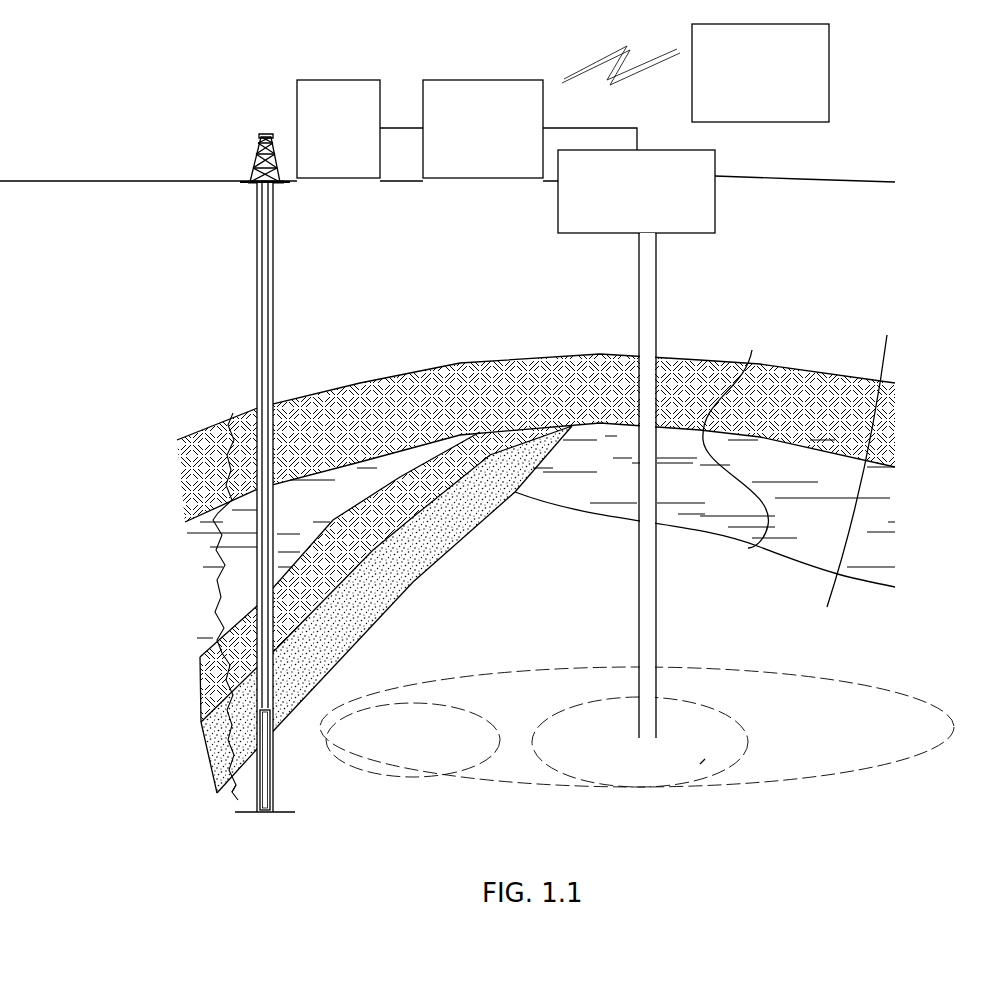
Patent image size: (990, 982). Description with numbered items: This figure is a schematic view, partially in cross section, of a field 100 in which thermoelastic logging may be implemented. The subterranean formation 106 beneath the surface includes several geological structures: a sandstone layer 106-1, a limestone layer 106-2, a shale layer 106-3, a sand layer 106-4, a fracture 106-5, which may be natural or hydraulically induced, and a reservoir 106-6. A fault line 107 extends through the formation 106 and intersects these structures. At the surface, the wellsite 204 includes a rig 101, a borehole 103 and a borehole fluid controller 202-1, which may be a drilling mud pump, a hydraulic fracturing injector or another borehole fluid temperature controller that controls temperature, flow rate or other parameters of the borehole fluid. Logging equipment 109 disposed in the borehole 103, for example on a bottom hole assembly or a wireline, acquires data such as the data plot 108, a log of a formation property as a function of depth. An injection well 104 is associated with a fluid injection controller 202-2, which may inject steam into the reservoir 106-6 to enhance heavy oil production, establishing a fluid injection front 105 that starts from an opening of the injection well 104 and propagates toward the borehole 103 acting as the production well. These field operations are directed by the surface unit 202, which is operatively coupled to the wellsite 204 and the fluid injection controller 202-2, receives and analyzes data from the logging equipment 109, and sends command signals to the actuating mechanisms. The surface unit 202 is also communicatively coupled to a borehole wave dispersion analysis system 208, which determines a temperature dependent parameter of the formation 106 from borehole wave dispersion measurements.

The field 100 is at (866, 112).
The rig 101 is at (266, 129).
The wellsite 204 is at (233, 156).
The borehole 103 is at (281, 258).
The injection well 104 is at (639, 318).
The fluid injection front 105 is at (531, 743).
The subterranean formation 106 is at (661, 498).
The sandstone layer 106-1 is at (535, 435).
The limestone layer 106-2 is at (541, 537).
The shale layer 106-3 is at (390, 575).
The sand layer 106-4 is at (390, 610).
The fracture 106-5 is at (285, 774).
The reservoir 106-6 is at (637, 727).
The fault line 107 is at (880, 357).
The data plot 108 is at (221, 597).
The logging equipment 109 is at (258, 793).
The surface unit 202 is at (508, 129).
The borehole fluid controller 202-1 is at (338, 129).
The fluid injection controller 202-2 is at (636, 191).
The borehole wave dispersion analysis system 208 is at (695, 73).